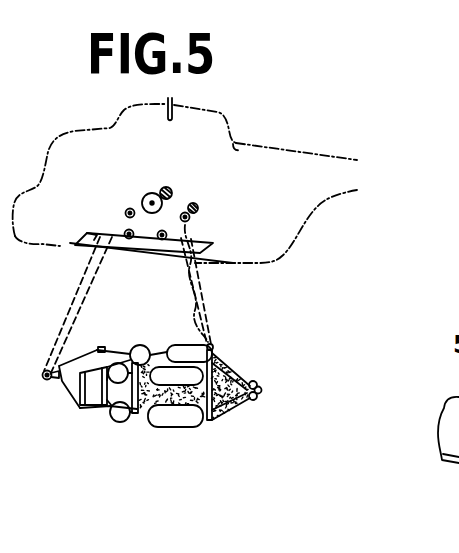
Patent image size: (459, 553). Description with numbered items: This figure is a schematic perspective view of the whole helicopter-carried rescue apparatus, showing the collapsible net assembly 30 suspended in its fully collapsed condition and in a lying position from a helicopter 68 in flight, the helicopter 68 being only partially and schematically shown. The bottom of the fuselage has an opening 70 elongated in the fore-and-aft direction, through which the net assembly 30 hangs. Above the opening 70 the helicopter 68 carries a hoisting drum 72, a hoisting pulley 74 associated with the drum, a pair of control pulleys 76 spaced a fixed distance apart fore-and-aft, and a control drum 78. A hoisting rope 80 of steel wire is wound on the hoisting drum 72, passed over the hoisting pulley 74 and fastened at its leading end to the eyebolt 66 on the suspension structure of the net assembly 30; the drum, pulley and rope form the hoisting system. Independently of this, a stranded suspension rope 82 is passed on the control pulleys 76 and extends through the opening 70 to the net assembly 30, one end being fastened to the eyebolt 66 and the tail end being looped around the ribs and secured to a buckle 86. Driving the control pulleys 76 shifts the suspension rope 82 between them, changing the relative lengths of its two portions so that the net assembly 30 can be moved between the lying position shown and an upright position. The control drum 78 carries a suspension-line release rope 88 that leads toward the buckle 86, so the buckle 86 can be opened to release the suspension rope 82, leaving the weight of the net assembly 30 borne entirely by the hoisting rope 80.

The collapsible net assembly 30 is at (145, 400).
The eyebolt 66 is at (45, 380).
The helicopter 68 is at (283, 144).
The opening 70 is at (72, 243).
The hoisting drum 72 is at (152, 193).
The hoisting pulley 74 is at (128, 209).
The control pulleys 76 is at (129, 239).
The control drum 78 is at (189, 221).
The hoisting rope 80 is at (78, 302).
The suspension rope 82 is at (92, 300).
The buckle 86 is at (217, 358).
The suspension-line release rope 88 is at (207, 309).